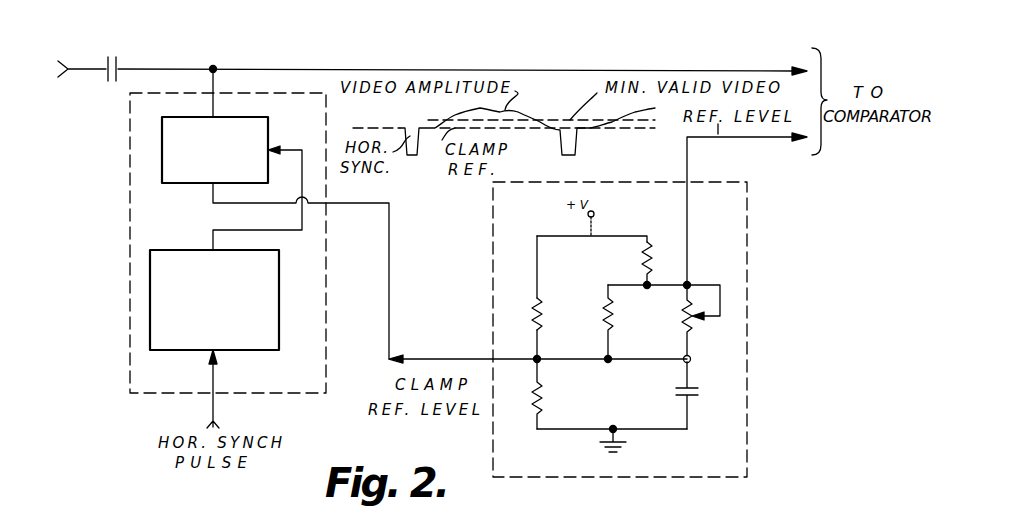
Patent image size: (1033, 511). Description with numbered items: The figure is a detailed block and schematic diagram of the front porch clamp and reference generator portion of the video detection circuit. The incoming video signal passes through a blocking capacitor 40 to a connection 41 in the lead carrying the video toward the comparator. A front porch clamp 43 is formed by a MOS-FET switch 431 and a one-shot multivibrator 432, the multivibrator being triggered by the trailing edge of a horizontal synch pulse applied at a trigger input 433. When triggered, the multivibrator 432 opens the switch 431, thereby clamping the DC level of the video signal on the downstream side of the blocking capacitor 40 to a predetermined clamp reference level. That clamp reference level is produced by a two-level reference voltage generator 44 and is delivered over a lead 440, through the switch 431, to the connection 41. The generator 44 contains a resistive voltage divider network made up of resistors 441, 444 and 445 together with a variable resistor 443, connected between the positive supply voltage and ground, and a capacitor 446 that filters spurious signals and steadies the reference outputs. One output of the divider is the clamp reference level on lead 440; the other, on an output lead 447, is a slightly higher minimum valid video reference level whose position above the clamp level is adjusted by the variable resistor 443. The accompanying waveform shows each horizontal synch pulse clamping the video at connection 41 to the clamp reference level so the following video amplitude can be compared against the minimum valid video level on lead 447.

The blocking capacitor 40 is at (114, 54).
The connection 41 is at (214, 64).
The front porch clamp 43 is at (130, 175).
The MOS-FET switch 431 is at (269, 132).
The one-shot multivibrator 432 is at (280, 280).
The trigger input 433 is at (216, 383).
The two-level reference voltage generator 44 is at (747, 237).
The lead 440 is at (440, 343).
The resistor 441 is at (645, 257).
The variable resistor 443 is at (692, 320).
The resistor 444 is at (560, 314).
The resistor 445 is at (546, 397).
The capacitor 446 is at (690, 400).
The output lead 447 is at (688, 168).